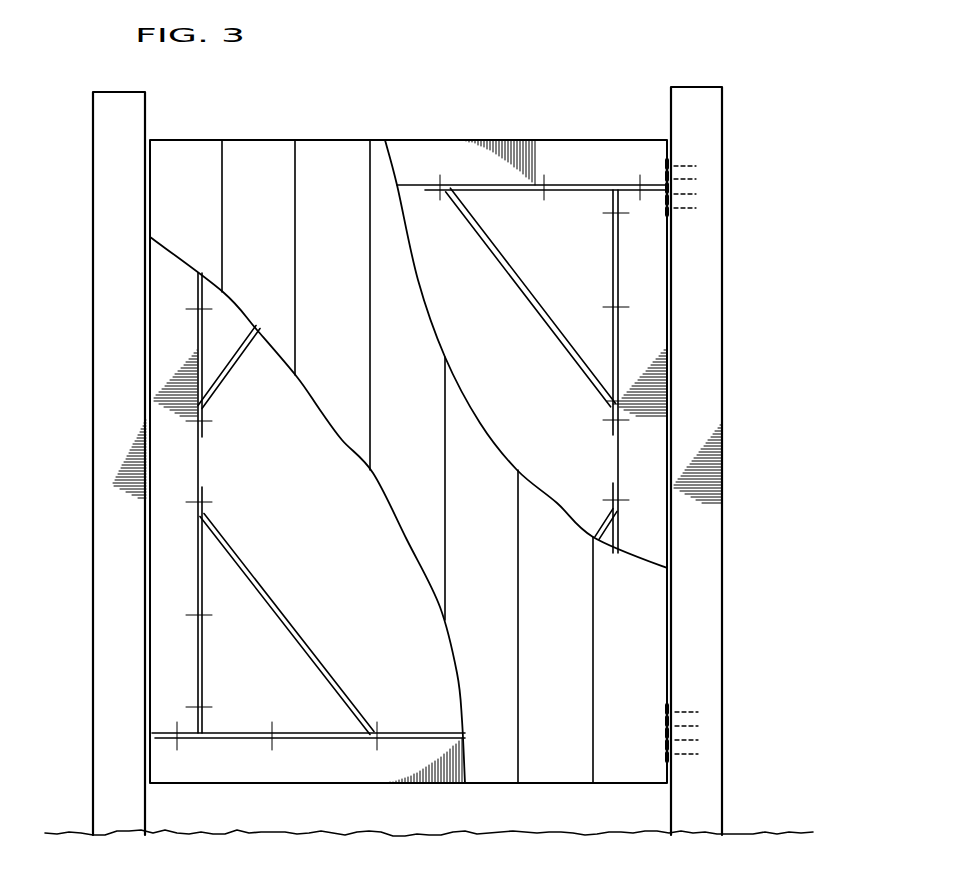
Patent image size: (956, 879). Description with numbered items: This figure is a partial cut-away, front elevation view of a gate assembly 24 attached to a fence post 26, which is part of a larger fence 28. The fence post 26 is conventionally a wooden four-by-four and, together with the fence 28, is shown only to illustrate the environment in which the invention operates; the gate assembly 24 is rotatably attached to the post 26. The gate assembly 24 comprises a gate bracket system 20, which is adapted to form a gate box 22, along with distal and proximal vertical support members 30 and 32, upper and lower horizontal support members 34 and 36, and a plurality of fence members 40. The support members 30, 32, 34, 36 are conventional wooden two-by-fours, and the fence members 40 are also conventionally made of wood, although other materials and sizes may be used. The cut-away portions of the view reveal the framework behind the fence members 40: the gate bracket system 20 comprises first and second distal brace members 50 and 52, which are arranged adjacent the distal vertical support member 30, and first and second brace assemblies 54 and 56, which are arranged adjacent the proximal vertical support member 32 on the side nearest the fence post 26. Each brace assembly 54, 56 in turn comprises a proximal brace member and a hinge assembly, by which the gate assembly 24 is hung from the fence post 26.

The gate bracket system 20 is at (562, 182).
The gate box 22 is at (533, 98).
The gate assembly 24 is at (513, 82).
The fence post 26 is at (707, 157).
The fence 28 is at (752, 82).
The distal vertical support member 30 is at (162, 353).
The proximal vertical support member 32 is at (653, 278).
The upper horizontal support member 34 is at (412, 150).
The lower horizontal support member 36 is at (290, 772).
The fence members 40 is at (258, 157).
The first distal brace member 50 is at (233, 383).
The second distal brace member 52 is at (262, 572).
The first brace assembly 54 is at (528, 313).
The second brace assembly 56 is at (593, 502).